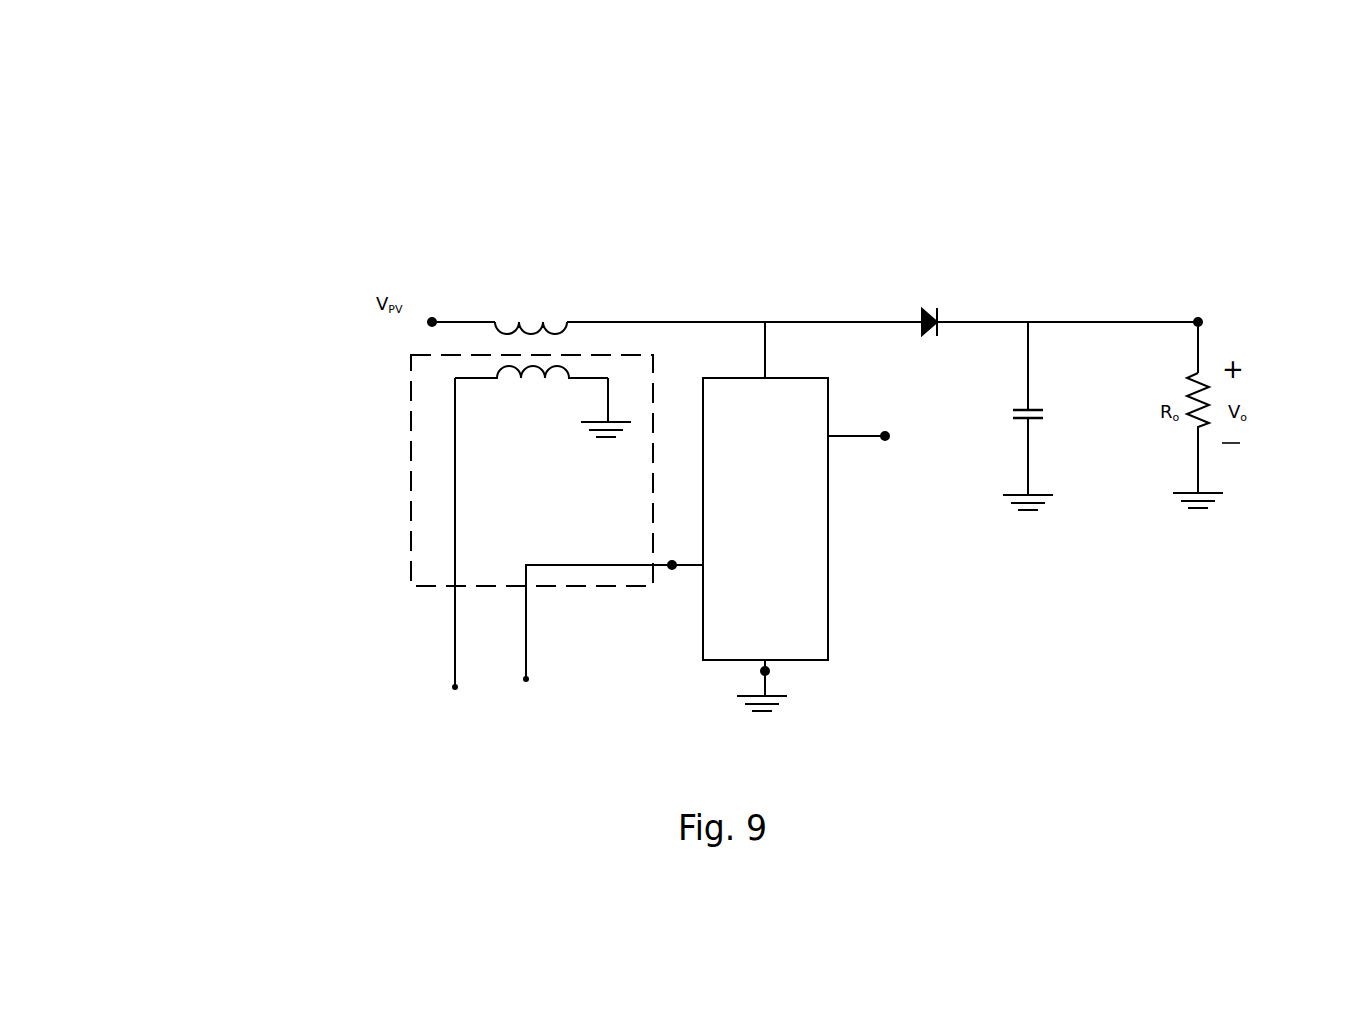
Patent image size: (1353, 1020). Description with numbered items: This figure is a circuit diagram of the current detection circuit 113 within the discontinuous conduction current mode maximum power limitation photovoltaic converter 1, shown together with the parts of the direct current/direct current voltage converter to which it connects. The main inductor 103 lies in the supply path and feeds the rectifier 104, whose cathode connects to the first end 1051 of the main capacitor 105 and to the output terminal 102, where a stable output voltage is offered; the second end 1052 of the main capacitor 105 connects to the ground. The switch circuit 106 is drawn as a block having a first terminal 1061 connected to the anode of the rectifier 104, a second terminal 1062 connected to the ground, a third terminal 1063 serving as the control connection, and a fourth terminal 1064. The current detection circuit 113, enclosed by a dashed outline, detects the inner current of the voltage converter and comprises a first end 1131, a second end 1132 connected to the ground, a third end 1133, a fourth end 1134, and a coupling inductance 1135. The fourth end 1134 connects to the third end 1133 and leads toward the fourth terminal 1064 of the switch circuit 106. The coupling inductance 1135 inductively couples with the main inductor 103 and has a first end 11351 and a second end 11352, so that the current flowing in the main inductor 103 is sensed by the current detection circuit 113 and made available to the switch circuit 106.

The discontinuous conduction current mode maximum power limitation photovoltaic conv 1 is at (1171, 173).
The output terminal 102 is at (1200, 320).
The main inductor 103 is at (496, 333).
The rectifier 104 is at (922, 308).
The main capacitor 105 is at (1040, 420).
The first end 1051 is at (1028, 367).
The second end 1052 is at (1030, 455).
The switch circuit 106 is at (802, 574).
The first terminal 1061 is at (765, 360).
The second terminal 1062 is at (768, 671).
The third terminal 1063 is at (885, 440).
The fourth terminal 1064 is at (672, 565).
The current detection circuit 113 is at (437, 475).
The first end 1131 is at (453, 617).
The second end 1132 is at (600, 378).
The third end 1133 is at (525, 657).
The fourth end 1134 is at (560, 566).
The coupling inductance 1135 is at (497, 368).
The first end 11351 is at (474, 380).
The second end 11352 is at (582, 378).